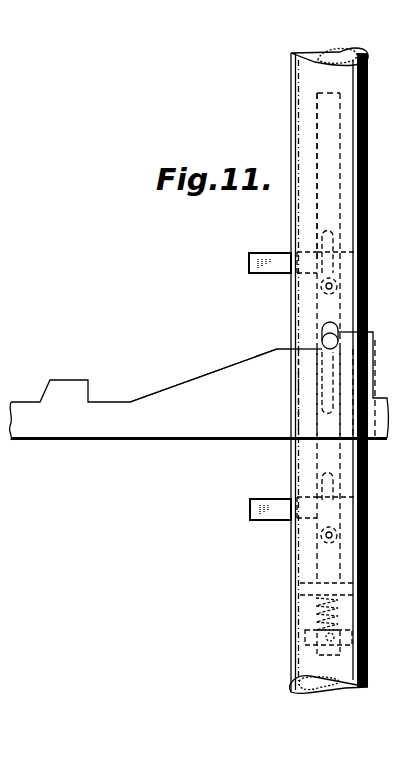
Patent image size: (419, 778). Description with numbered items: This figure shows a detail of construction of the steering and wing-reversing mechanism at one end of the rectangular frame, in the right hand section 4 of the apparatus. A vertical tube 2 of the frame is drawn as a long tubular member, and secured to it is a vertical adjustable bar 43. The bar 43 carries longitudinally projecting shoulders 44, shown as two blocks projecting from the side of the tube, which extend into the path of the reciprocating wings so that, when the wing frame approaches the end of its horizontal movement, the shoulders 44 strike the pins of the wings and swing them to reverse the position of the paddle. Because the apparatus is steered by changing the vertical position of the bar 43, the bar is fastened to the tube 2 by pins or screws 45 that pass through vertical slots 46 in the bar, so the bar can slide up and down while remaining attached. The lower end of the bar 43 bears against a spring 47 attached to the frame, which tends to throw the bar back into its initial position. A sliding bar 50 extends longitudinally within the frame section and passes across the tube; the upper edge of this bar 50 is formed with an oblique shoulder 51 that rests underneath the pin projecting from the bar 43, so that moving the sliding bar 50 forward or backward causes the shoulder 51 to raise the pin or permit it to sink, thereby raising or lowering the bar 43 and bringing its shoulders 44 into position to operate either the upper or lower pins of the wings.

The vertical tube 2 is at (350, 203).
The right hand section 4 is at (330, 342).
The vertical adjustable bar 43 is at (330, 138).
The shoulder 44 is at (267, 258).
The pin or screw 45 is at (348, 287).
The vertical slot 46 is at (370, 252).
The spring 47 is at (355, 612).
The sliding bar 50 is at (163, 417).
The oblique shoulder 51 is at (200, 375).